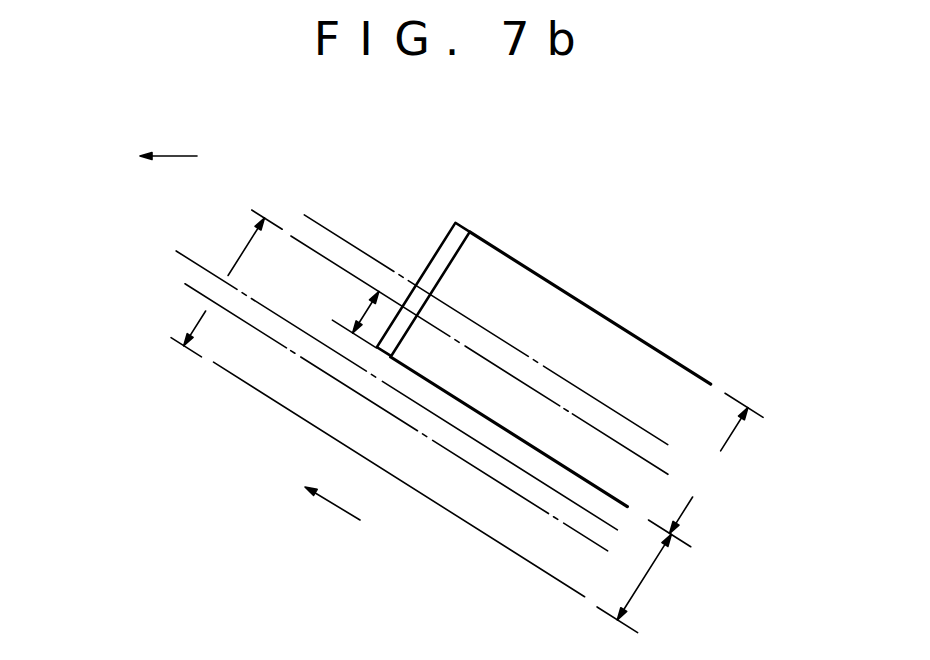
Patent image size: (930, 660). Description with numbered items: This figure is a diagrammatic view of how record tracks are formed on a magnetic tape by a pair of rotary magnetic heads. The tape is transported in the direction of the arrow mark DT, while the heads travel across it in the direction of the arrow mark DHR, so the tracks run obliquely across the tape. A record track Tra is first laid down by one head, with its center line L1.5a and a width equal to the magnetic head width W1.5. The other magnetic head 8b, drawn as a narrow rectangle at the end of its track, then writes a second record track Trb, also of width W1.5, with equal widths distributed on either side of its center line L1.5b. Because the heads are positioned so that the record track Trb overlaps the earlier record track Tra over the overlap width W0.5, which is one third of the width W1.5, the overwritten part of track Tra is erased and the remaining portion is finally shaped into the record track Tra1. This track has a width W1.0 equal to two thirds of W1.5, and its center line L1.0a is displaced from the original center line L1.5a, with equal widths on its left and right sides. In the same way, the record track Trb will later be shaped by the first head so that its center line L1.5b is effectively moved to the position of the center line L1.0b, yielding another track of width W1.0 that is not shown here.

The magnetic head 8b is at (456, 228).
The record track Trb is at (565, 303).
The record track Tra is at (245, 363).
The record track Tra1 is at (463, 505).
The center line of record track Trb L1.5b is at (480, 306).
The center line L1.0b is at (708, 503).
The center line of record track Tra L1.5a is at (372, 370).
The center line of record track Tra1 L1.0a is at (360, 407).
The magnetic head width W1.5 is at (470, 379).
The width of record track Tra1 W1.0 is at (657, 577).
The overlap width W0.5 is at (345, 308).
The direction of tape transportation DT is at (168, 135).
The direction of transportation of the magnetic heads DHR is at (327, 520).